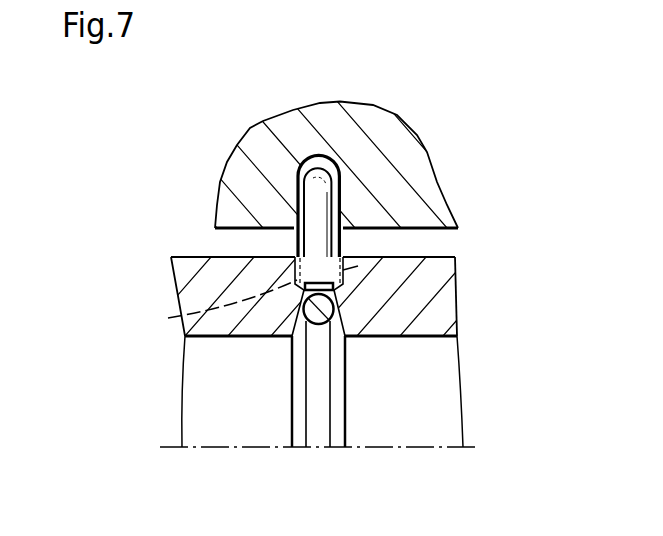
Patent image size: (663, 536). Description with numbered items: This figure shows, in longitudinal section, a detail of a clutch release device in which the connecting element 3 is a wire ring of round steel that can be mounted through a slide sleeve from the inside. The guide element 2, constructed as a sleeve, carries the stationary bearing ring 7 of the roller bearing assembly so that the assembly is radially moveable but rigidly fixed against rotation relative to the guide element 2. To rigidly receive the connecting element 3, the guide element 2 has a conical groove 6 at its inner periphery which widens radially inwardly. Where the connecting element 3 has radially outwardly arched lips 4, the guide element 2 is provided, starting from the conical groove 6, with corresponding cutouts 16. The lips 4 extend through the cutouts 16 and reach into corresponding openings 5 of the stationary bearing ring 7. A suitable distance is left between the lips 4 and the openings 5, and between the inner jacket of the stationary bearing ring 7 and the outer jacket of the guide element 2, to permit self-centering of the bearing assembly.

The guide element 2 is at (432, 292).
The connecting element 3 is at (292, 332).
The lips 4 is at (318, 195).
The openings 5 is at (323, 163).
The conical groove 6 is at (314, 313).
The stationary bearing ring 7 is at (413, 205).
The cutouts 16 is at (168, 318).